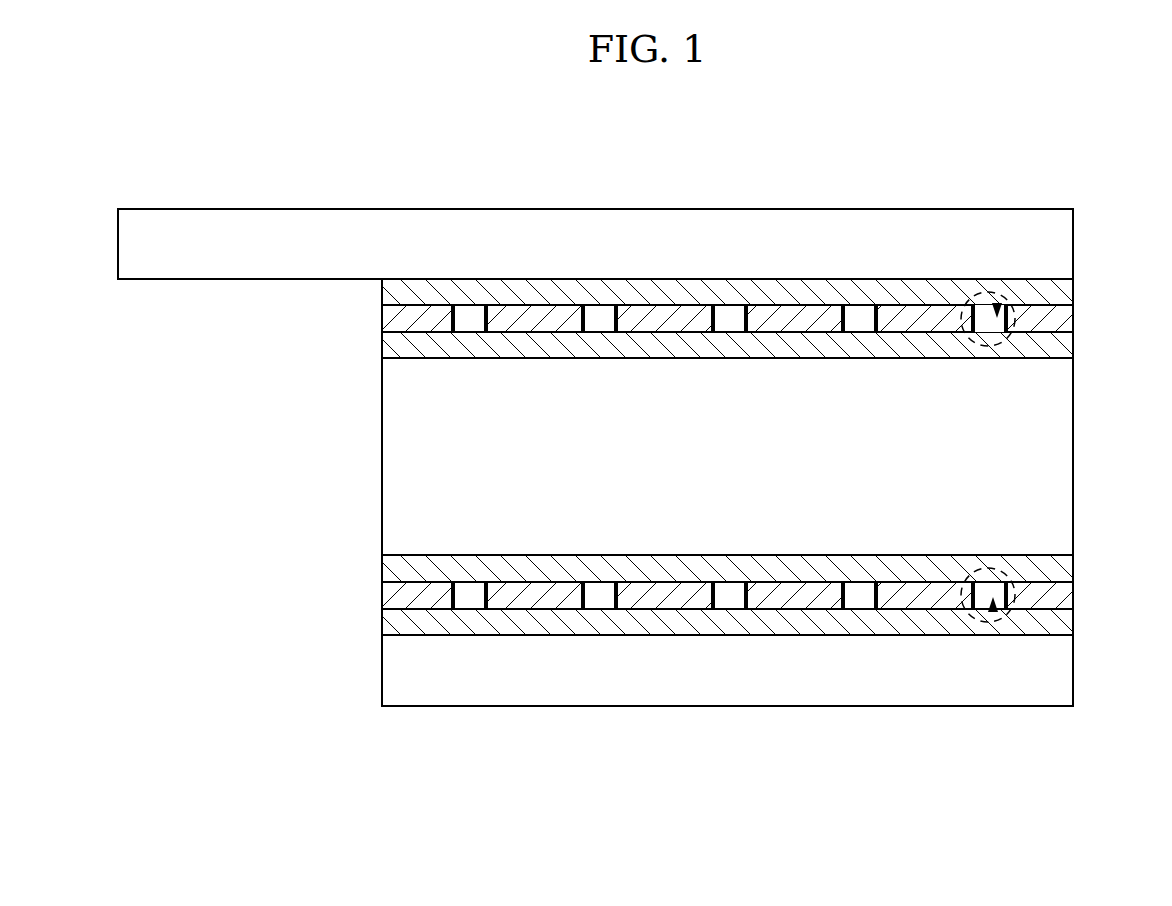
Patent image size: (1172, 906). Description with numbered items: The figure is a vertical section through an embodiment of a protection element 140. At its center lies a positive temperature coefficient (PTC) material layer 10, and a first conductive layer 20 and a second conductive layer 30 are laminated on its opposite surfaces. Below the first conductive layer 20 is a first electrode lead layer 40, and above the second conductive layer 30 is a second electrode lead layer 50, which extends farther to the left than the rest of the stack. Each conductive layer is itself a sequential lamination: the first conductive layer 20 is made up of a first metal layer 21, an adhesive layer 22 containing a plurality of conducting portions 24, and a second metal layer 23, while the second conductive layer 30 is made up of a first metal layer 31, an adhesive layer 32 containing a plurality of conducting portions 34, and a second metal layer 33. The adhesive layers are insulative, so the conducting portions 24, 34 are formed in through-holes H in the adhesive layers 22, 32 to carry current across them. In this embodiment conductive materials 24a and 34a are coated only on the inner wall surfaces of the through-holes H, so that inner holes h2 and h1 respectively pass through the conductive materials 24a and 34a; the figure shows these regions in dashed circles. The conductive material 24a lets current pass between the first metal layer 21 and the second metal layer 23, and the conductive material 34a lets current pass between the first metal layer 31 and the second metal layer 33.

The protection element 140 is at (675, 112).
The second electrode lead layer 50 is at (1063, 233).
The second conductive layer 30 is at (761, 461).
The second metal layer 33 is at (1062, 292).
The adhesive layer 32 is at (1062, 318).
The first metal layer 31 is at (1062, 345).
The conducting portion 34 is at (1007, 365).
The conductive material 34a is at (983, 311).
The inner hole h1 is at (997, 305).
The through-hole H is at (945, 333).
The positive temperature coefficient (PTC) material layer 10 is at (1063, 455).
The first conductive layer 20 is at (761, 641).
The second metal layer 23 is at (1063, 577).
The adhesive layer 22 is at (1063, 600).
The first metal layer 21 is at (1063, 623).
The conducting portion 24 is at (1002, 556).
The conductive material 24a is at (983, 620).
The inner hole h2 is at (994, 612).
The first electrode lead layer 40 is at (1063, 684).